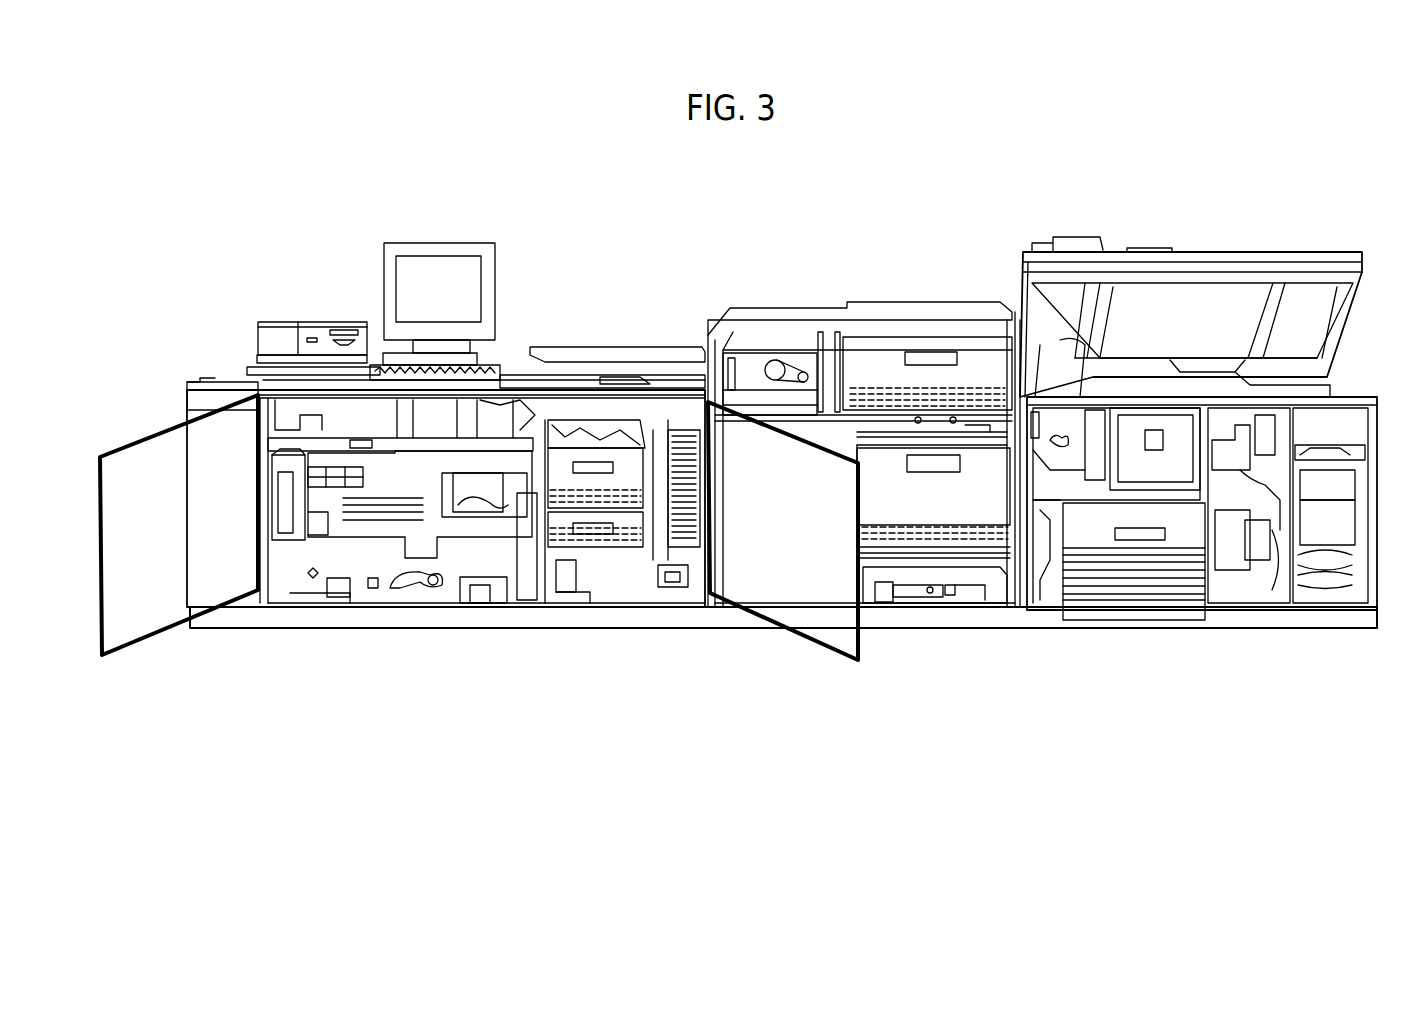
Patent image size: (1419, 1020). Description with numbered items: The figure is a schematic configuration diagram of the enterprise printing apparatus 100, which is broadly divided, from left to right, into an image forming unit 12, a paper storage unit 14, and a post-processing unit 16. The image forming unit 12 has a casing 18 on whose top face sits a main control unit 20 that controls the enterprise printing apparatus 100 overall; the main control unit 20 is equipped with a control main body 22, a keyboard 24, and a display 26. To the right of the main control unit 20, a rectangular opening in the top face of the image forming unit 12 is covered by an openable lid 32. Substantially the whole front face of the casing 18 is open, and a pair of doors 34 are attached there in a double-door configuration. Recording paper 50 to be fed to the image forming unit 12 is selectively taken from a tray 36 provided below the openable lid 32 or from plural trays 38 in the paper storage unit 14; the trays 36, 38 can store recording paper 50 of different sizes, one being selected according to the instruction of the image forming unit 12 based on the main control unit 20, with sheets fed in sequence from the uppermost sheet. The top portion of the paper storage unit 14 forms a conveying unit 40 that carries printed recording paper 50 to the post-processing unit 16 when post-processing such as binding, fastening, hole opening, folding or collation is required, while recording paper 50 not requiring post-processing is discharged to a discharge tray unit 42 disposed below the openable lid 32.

The enterprise printing apparatus 100 is at (857, 255).
The image forming unit 12 is at (718, 708).
The paper storage unit 14 is at (1005, 699).
The post-processing unit 16 is at (1370, 696).
The casing 18 is at (203, 398).
The main control unit 20 is at (368, 165).
The control main body 22 is at (318, 322).
The keyboard 24 is at (381, 363).
The display 26 is at (405, 280).
The openable lid 32 is at (627, 345).
The doors 34 is at (152, 605).
The tray 36 is at (592, 488).
The trays 38 is at (895, 390).
The conveying unit 40 is at (757, 362).
The discharge tray unit 42 is at (625, 527).
The recording paper 50 is at (567, 490).